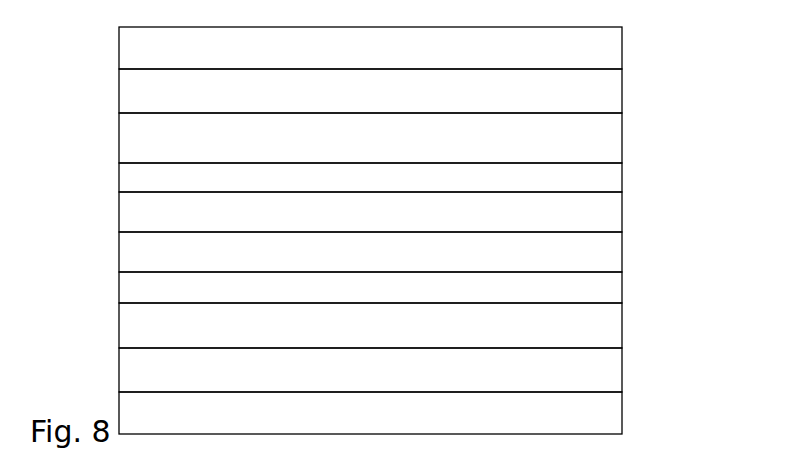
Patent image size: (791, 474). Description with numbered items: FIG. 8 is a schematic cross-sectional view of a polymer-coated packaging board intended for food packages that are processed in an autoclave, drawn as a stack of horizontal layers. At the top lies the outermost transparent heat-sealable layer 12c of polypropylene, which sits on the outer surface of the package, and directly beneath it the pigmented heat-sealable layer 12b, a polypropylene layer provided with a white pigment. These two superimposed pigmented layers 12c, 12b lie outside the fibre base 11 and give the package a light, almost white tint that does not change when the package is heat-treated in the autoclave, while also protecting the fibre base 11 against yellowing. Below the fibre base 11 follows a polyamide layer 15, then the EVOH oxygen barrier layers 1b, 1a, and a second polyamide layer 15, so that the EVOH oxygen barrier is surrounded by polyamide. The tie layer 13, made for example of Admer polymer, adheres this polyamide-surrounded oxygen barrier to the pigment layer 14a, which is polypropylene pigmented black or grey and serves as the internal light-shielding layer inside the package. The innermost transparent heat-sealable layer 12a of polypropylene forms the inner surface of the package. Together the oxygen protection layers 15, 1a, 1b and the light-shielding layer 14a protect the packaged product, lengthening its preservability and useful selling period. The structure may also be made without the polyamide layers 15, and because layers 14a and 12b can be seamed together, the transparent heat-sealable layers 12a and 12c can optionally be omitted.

The outermost heat-sealable layer 12c is at (610, 58).
The pigmented heat-sealable layer 12b is at (610, 95).
The fibre base 11 is at (610, 142).
The polyamide layer 15 is at (610, 183).
The EVOH layer with a lower ethylene monomer content 1b is at (610, 212).
The EVOH layer with a higher ethylene monomer content 1a is at (610, 249).
The tie layer 13 is at (610, 331).
The pigmented black or grey heat-sealable layer 14a is at (610, 374).
The innermost heat-sealable layer 12a is at (610, 414).